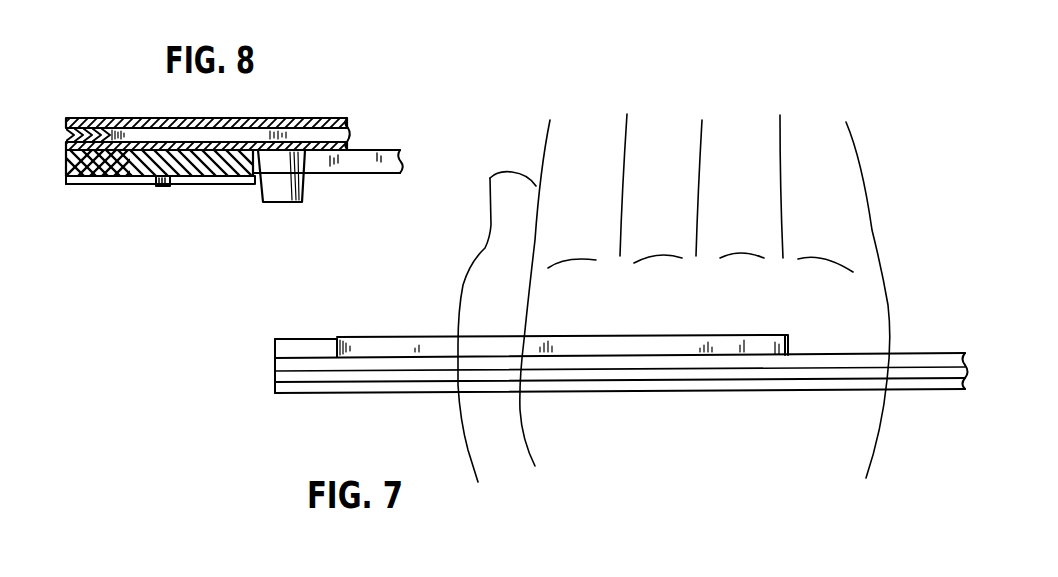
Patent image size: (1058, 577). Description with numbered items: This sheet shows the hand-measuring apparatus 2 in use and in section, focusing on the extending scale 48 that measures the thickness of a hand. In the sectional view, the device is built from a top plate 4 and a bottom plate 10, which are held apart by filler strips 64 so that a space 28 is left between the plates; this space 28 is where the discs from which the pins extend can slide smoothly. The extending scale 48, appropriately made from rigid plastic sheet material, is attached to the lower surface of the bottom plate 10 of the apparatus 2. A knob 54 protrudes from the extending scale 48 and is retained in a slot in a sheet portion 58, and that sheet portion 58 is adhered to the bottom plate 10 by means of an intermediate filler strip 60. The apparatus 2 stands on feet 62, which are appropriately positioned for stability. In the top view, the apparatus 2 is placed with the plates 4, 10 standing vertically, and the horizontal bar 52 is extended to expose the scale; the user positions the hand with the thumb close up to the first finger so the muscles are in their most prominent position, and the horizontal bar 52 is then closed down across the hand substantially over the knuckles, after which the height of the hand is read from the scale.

In FIG. 8, the apparatus 2 is at (302, 114).
In FIG. 7, the apparatus 2 is at (302, 407).
In FIG. 8, the top plate 4 is at (345, 120).
In FIG. 7, the top plate 4 is at (354, 389).
In FIG. 8, the bottom plate 10 is at (345, 144).
In FIG. 7, the bottom plate 10 is at (287, 353).
In FIG. 8, the space 28 is at (147, 138).
In FIG. 8, the extending scale 48 is at (135, 170).
In FIG. 7, the horizontal bar 52 is at (654, 342).
In FIG. 8, the knob 54 is at (163, 188).
In FIG. 8, the sheet portion 58 is at (212, 180).
In FIG. 8, the intermediate filler strip 60 is at (68, 160).
In FIG. 8, the feet 62 is at (279, 190).
In FIG. 7, the filler strips 64 is at (285, 373).